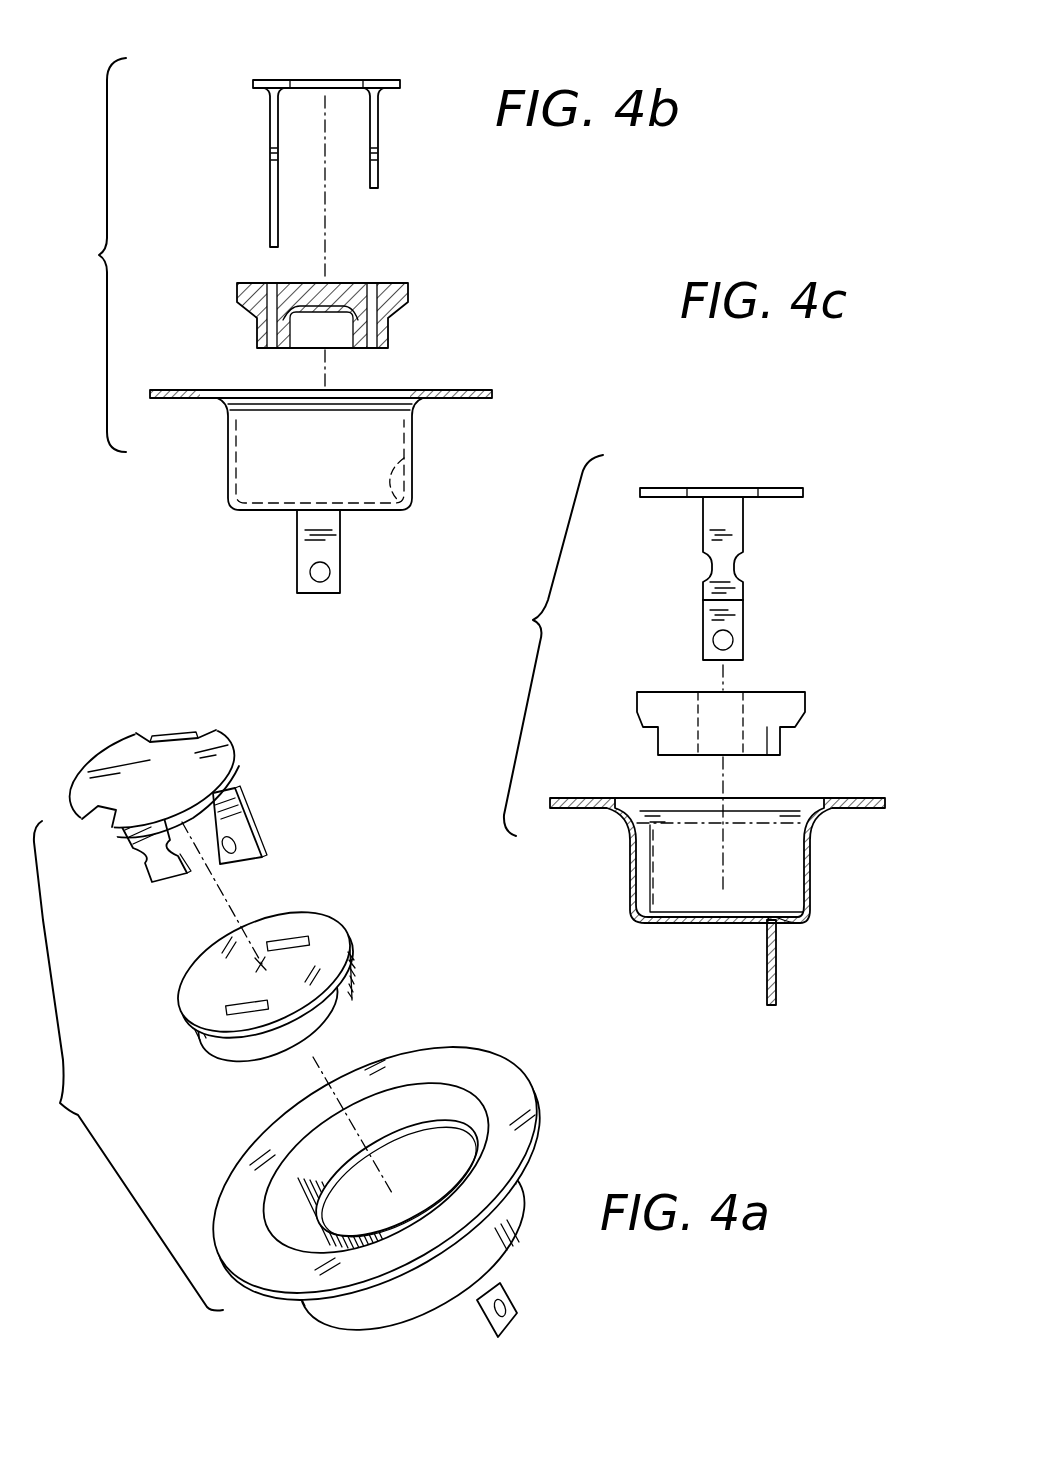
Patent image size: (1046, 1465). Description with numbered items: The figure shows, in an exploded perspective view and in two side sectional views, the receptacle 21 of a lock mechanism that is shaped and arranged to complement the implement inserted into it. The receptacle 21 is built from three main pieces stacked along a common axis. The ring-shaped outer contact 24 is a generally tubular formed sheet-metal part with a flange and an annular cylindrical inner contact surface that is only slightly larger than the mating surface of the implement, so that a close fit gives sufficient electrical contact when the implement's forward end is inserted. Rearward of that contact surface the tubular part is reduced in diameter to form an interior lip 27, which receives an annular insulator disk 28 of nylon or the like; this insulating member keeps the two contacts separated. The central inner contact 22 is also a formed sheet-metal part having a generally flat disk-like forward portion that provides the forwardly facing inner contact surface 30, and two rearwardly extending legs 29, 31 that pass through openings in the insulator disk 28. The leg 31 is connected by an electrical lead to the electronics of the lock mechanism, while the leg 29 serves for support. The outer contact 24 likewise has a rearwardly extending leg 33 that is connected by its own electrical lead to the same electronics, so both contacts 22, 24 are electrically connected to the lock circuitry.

In FIG. 4B, the receptacle 21 is at (322, 297).
In FIG. 4A, the receptacle 21 is at (318, 1015).
In FIG. 4B, the central inner contact 22 is at (324, 141).
In FIG. 4C, the central inner contact 22 is at (731, 555).
In FIG. 4A, the central inner contact 22 is at (176, 778).
In FIG. 4B, the ring-shaped outer contact 24 is at (321, 421).
In FIG. 4C, the ring-shaped outer contact 24 is at (717, 829).
In FIG. 4A, the ring-shaped outer contact 24 is at (383, 1172).
In FIG. 4B, the interior lip 27 is at (405, 454).
In FIG. 4C, the interior lip 27 is at (801, 912).
In FIG. 4A, the interior lip 27 is at (448, 1127).
In FIG. 4B, the insulator disk 28 is at (237, 288).
In FIG. 4C, the insulator disk 28 is at (780, 697).
In FIG. 4A, the insulator disk 28 is at (300, 920).
In FIG. 4B, the leg 29 is at (378, 179).
In FIG. 4C, the leg 29 is at (735, 520).
In FIG. 4A, the leg 29 is at (137, 826).
In FIG. 4B, the contact plate 30 is at (281, 80).
In FIG. 4C, the contact plate 30 is at (680, 488).
In FIG. 4A, the contact plate 30 is at (110, 752).
In FIG. 4B, the leg 31 is at (270, 208).
In FIG. 4C, the leg 31 is at (735, 626).
In FIG. 4A, the leg 31 is at (238, 818).
In FIG. 4B, the rearwardly extending leg 33 is at (306, 553).
In FIG. 4C, the rearwardly extending leg 33 is at (778, 949).
In FIG. 4A, the rearwardly extending leg 33 is at (519, 1304).